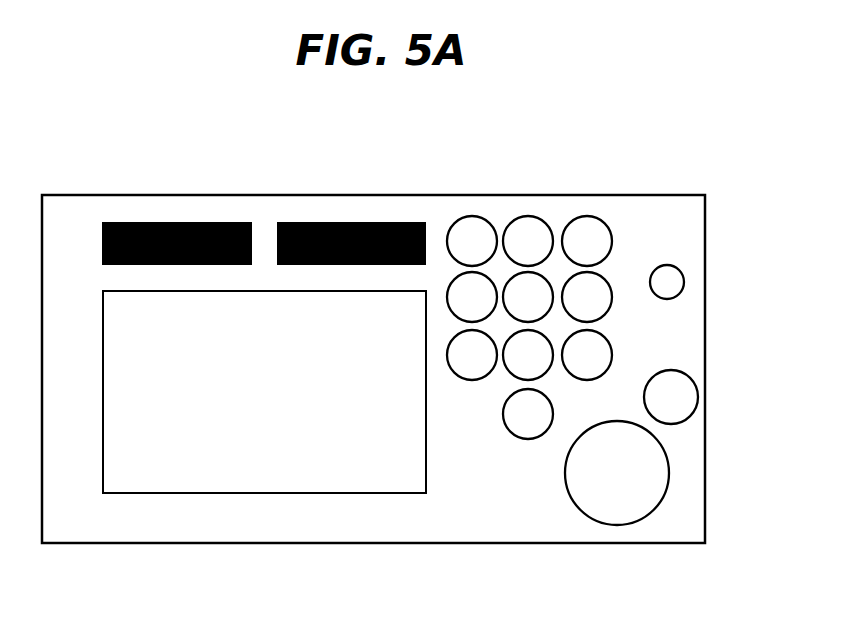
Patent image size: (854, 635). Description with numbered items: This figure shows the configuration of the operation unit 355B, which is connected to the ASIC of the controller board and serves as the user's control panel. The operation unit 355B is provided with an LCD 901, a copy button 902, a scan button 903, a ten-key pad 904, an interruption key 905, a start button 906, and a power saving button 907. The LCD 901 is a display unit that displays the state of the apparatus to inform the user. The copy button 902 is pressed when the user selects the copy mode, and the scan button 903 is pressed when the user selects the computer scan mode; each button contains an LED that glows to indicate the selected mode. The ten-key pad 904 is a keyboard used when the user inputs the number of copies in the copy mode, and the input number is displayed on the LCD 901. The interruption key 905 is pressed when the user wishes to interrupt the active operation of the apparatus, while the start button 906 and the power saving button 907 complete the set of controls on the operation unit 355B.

The operation unit 355B is at (676, 195).
The LCD 901 is at (307, 494).
The copy button 902 is at (198, 222).
The scan button 903 is at (361, 222).
The ten-key pad 904 is at (446, 181).
The interruption key 905 is at (698, 397).
The start button 906 is at (617, 525).
The power saving button 907 is at (684, 282).